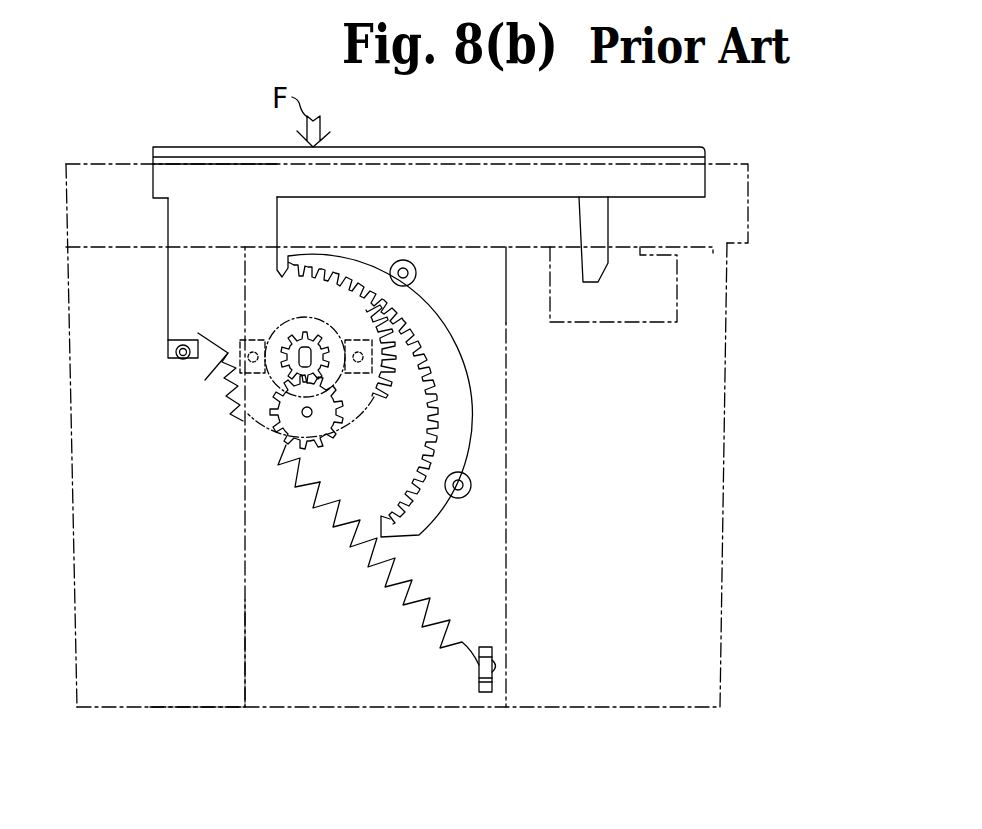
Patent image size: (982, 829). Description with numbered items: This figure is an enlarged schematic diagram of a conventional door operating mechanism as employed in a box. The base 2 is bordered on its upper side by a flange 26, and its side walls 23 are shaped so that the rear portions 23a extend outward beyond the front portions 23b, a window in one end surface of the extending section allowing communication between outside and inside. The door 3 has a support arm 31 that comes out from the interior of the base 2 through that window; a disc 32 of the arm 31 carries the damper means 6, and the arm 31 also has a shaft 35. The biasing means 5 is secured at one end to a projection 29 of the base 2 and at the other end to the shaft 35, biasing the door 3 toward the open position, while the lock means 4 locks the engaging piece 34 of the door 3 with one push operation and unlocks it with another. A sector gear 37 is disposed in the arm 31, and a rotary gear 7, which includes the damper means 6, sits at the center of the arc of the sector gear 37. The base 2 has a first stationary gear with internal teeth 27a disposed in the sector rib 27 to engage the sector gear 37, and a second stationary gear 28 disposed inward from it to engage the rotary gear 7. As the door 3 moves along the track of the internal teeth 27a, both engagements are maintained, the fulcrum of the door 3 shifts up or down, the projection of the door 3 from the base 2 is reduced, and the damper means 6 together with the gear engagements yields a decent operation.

The base 2 is at (727, 343).
The door 3 is at (650, 147).
The lock means 4 is at (660, 296).
The biasing means 5 is at (369, 614).
The damper means 6 is at (283, 334).
The rotary gear 7 is at (203, 345).
The side walls 23 is at (197, 688).
The rear portions 23a is at (173, 515).
The front portions 23b is at (447, 695).
The flange 26 is at (757, 172).
The sector rib 27 is at (433, 367).
The internal teeth 27a is at (431, 455).
The second stationary gear 28 is at (290, 500).
The projection 29 is at (486, 692).
The support arm 31 is at (185, 278).
The disc 32 is at (262, 398).
The engaging piece 34 is at (600, 217).
The shaft 35 is at (192, 360).
The sector gear 37 is at (386, 390).